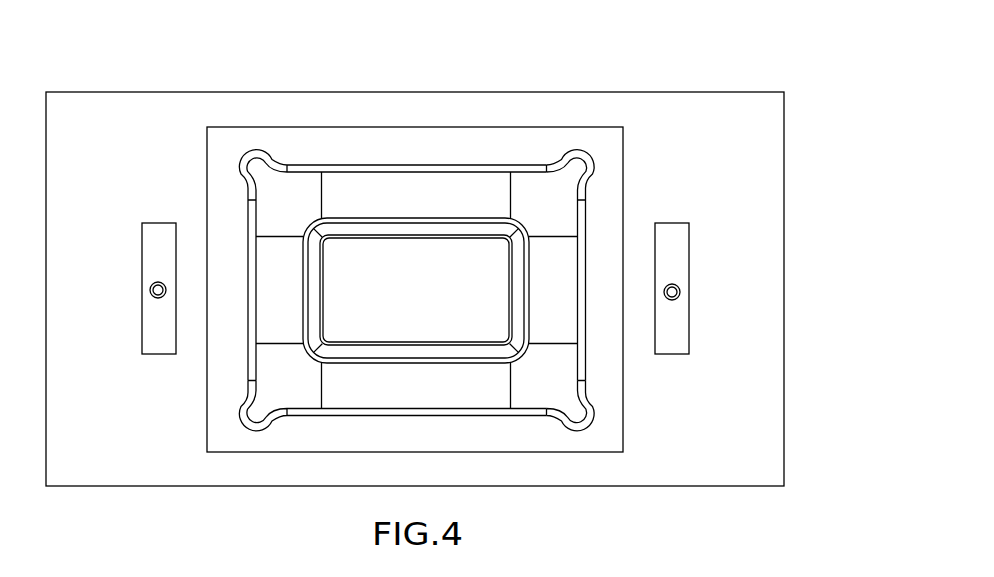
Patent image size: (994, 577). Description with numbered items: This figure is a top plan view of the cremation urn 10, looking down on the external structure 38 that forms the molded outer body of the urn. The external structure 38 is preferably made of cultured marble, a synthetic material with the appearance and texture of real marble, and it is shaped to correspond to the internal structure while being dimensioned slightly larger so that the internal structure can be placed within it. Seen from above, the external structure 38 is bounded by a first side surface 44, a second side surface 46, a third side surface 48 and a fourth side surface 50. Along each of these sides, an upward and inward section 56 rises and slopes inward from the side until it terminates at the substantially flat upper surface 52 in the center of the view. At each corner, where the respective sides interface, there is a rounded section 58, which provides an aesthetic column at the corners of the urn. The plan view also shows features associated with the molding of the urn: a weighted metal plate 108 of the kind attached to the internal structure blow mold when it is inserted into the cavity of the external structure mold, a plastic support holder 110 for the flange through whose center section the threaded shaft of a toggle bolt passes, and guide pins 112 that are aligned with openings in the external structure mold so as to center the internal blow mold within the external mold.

The cremation urn 10 is at (441, 288).
The external structure 38 is at (480, 187).
The upper surface 52 is at (428, 258).
The first side surface 44 is at (517, 420).
The second side surface 46 is at (586, 302).
The third side surface 48 is at (352, 167).
The fourth side surface 50 is at (250, 283).
The upward and inward section 56 is at (553, 263).
The rounded section 58 is at (590, 405).
The weighted metal plate 108 is at (150, 453).
The plastic support holder 110 is at (602, 437).
The guide pins 112 is at (152, 297).